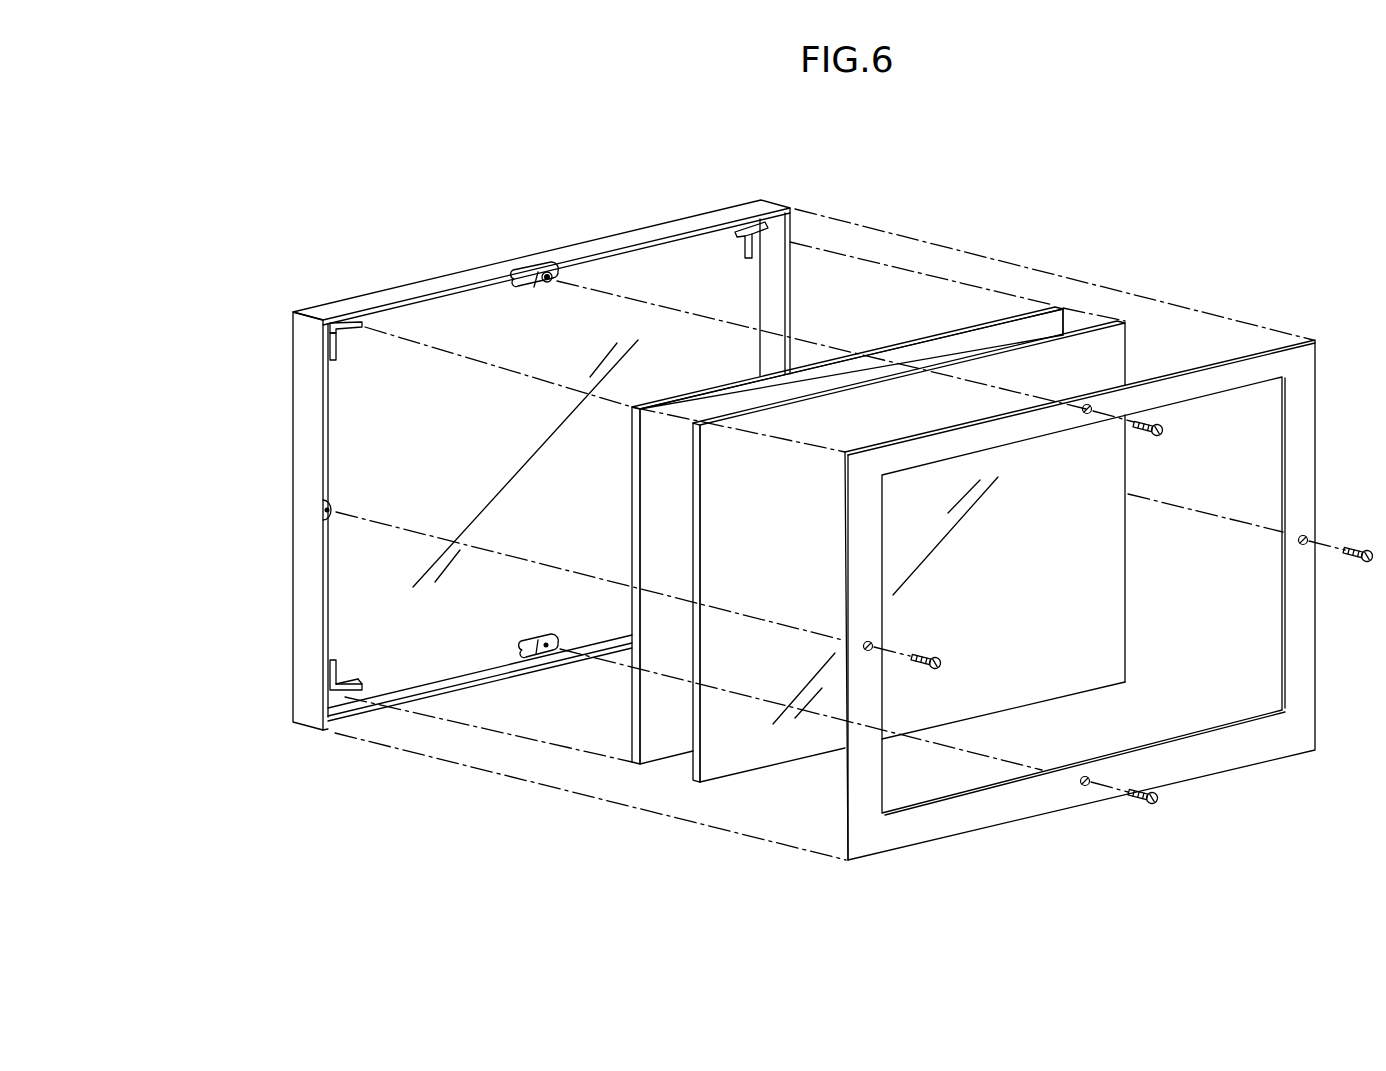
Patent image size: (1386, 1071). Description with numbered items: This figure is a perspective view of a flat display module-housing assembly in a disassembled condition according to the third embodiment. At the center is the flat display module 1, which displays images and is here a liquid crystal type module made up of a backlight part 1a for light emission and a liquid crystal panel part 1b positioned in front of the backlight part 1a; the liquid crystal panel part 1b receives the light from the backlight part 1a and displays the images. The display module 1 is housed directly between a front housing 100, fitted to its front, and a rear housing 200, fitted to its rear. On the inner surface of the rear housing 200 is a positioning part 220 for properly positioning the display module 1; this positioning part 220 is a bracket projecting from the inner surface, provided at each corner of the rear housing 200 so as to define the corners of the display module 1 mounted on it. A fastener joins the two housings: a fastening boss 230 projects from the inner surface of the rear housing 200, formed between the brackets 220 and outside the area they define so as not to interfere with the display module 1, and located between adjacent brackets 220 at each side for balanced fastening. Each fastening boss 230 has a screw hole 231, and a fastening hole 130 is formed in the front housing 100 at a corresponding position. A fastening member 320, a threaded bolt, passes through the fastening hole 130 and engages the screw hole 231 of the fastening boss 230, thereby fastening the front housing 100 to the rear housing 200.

The flat display module 1 is at (888, 492).
The backlight part 1a is at (1052, 305).
The liquid crystal panel part 1b is at (1053, 236).
The front housing 100 is at (1320, 334).
The fastening hole 130 is at (1087, 414).
The rear housing 200 is at (778, 199).
The positioning part 220 is at (738, 233).
The fastening boss 230 is at (522, 272).
The screw hole 231 is at (548, 272).
The fastening member 320 is at (1163, 433).